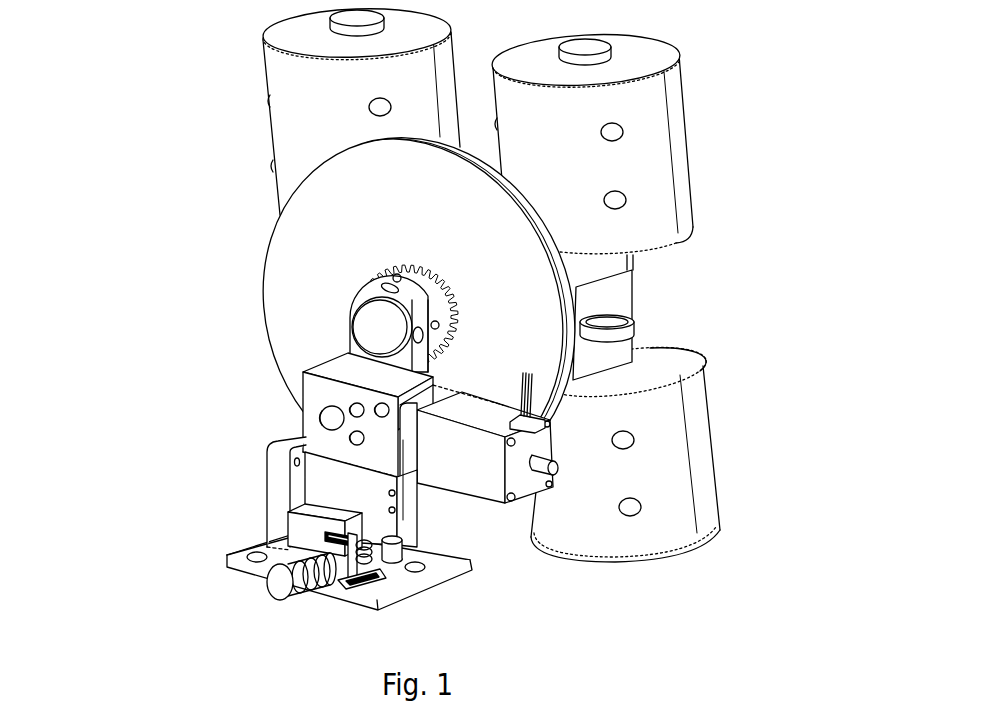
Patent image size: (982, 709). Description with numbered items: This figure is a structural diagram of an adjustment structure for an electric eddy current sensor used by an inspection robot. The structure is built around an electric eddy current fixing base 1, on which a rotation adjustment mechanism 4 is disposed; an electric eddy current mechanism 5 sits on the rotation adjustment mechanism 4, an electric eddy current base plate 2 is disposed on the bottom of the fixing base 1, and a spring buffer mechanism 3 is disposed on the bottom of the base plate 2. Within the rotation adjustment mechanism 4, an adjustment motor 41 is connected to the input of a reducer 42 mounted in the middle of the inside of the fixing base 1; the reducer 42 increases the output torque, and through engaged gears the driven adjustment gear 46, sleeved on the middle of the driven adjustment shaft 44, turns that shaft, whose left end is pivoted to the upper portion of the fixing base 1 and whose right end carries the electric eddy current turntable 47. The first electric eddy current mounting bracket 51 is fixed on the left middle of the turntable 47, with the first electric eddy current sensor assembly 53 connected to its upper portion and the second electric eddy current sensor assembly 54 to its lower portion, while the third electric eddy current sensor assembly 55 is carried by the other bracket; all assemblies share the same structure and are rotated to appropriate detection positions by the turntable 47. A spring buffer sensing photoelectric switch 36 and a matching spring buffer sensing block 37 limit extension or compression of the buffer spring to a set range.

The electric eddy current fixing base 1 is at (420, 352).
The electric eddy current base plate 2 is at (447, 555).
The spring buffer mechanism 3 is at (275, 571).
The rotation adjustment mechanism 4 is at (313, 400).
The electric eddy current mechanism 5 is at (298, 98).
The spring buffer sensing photoelectric switch 36 is at (292, 523).
The spring buffer sensing block 37 is at (382, 575).
The adjustment motor 41 is at (468, 448).
The reducer 42 is at (340, 372).
The driven adjustment shaft 44 is at (378, 330).
The driven adjustment gear 46 is at (457, 292).
The electric eddy current turntable 47 is at (312, 233).
The first electric eddy current mounting bracket 51 is at (597, 285).
The first electric eddy current sensor assembly 53 is at (640, 102).
The second electric eddy current sensor assembly 54 is at (683, 373).
The third electric eddy current sensor assembly 55 is at (275, 62).